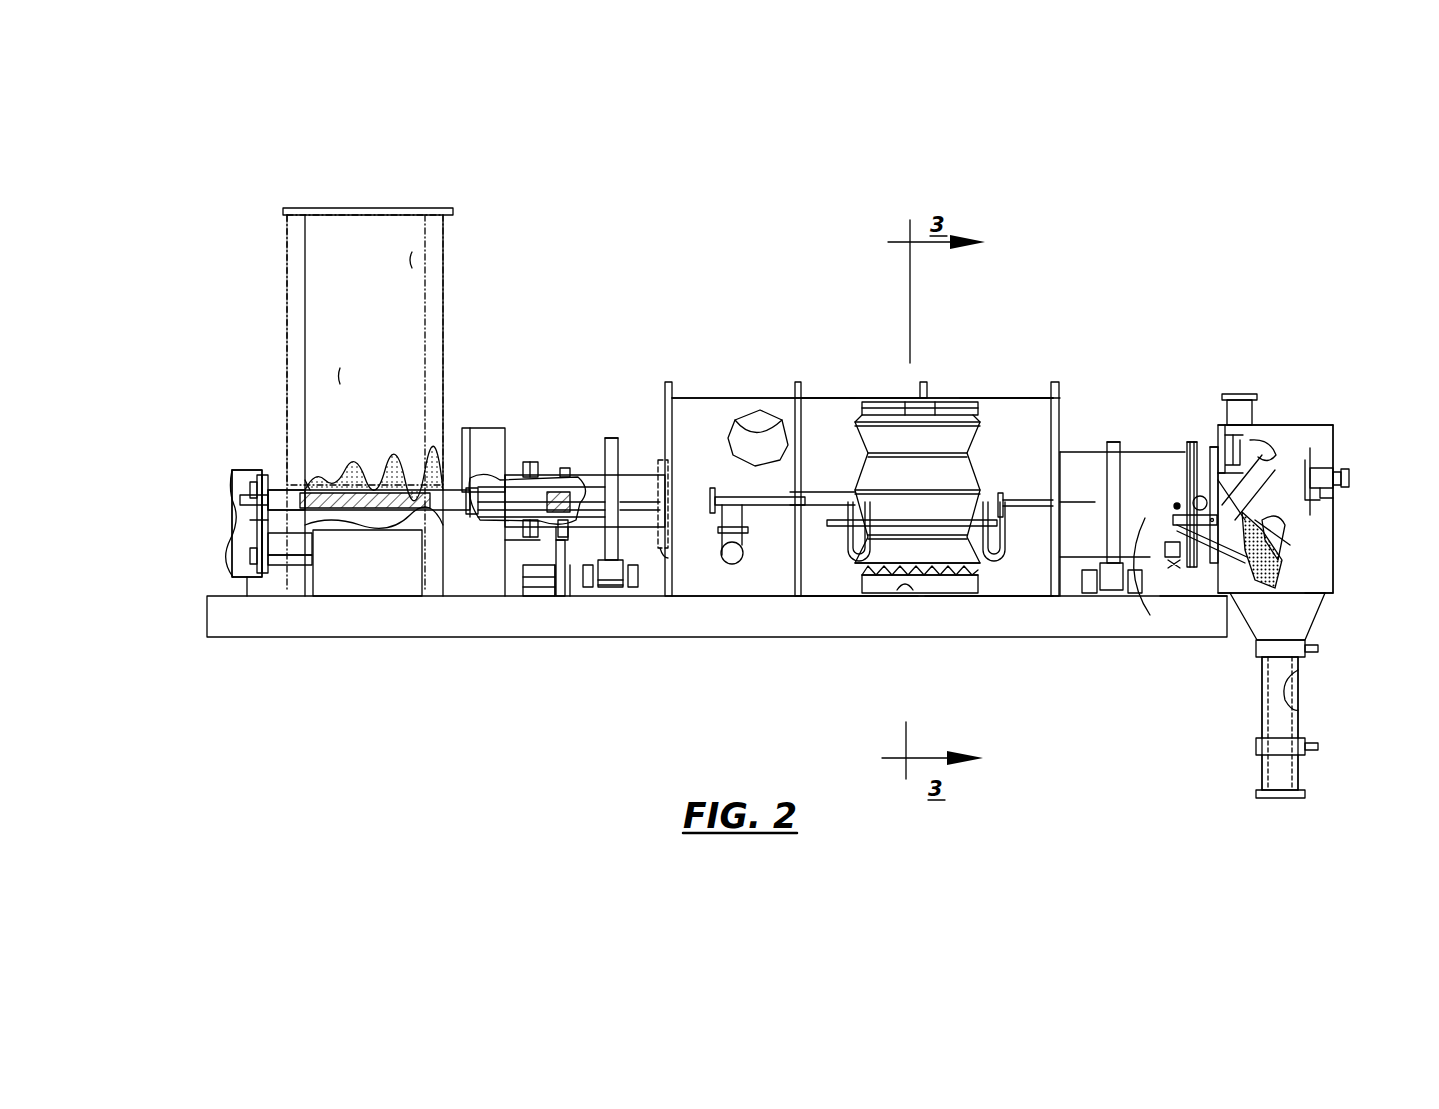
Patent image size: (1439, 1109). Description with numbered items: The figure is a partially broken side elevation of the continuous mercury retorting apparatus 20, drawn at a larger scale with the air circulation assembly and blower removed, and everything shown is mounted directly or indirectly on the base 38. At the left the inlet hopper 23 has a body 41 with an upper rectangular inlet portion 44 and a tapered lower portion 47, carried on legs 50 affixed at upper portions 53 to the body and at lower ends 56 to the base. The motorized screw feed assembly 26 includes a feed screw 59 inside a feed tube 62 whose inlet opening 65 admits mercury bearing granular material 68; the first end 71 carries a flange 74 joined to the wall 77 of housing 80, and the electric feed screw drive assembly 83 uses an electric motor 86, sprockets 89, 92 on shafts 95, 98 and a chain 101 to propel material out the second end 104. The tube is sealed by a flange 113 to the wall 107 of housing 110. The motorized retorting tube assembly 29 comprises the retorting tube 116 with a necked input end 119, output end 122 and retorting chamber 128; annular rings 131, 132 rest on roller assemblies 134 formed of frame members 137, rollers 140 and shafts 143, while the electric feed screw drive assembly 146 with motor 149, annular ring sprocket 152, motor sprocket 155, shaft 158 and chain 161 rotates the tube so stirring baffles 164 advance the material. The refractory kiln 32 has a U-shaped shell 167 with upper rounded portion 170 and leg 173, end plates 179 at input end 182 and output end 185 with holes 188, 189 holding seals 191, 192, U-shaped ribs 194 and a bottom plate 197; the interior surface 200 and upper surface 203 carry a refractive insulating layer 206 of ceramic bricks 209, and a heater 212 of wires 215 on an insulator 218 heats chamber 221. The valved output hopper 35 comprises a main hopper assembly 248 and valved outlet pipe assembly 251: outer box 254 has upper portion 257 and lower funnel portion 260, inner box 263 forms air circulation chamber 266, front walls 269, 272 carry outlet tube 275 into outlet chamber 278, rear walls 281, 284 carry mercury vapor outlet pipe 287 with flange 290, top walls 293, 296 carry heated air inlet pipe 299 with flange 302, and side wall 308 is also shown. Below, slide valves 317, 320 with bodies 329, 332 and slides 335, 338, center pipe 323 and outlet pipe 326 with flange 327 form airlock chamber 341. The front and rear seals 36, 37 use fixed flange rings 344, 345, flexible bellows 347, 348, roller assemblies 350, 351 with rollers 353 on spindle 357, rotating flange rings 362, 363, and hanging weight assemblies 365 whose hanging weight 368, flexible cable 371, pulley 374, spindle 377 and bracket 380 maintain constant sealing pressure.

The retorting apparatus 20 is at (772, 235).
The inlet hopper 23 is at (478, 207).
The motorized screw feed assembly 26 is at (237, 449).
The motorized retorting tube assembly 29 is at (620, 342).
The refractory kiln 32 is at (810, 330).
The valved output hopper 35 is at (1323, 282).
The front seal 36 is at (548, 306).
The rear seal 37 is at (1207, 290).
The base 38 is at (378, 640).
The body 41 is at (348, 244).
The upper rectangular inlet portion 44 is at (412, 260).
The tapered lower portion 47 is at (340, 376).
The legs 50 is at (290, 316).
The upper portions 53 is at (288, 262).
The lower ends 56 is at (432, 576).
The feed screw 59 is at (315, 470).
The feed tube 62 is at (452, 485).
The inlet opening 65 is at (322, 478).
The mercury bearing granular material 68 is at (402, 472).
The first end 71 is at (285, 488).
The flange 74 is at (270, 478).
The wall 77 is at (298, 520).
The housing 80 is at (235, 585).
The electric feed screw drive assembly 83 is at (236, 527).
The electric motor 86 is at (292, 558).
The sprocket 89 is at (252, 560).
The sprocket 92 is at (255, 498).
The shaft 95 is at (255, 596).
The shaft 98 is at (256, 510).
The chain 101 is at (255, 530).
The second end 104 is at (545, 490).
The wall 107 is at (507, 545).
The housing 110 is at (480, 428).
The flange 113 is at (510, 520).
The retorting tube 116 is at (636, 476).
The input end 119 is at (598, 478).
The output end 122 is at (1120, 480).
The retorting chamber 128 is at (520, 560).
The annular ring 131 is at (612, 440).
The annular ring 132 is at (1110, 442).
The roller assemblies 134 is at (612, 592).
The frame members 137 is at (626, 592).
The rollers 140 is at (622, 534).
The shafts 143 is at (636, 590).
The electric feed screw drive assembly 146 is at (530, 592).
The electric motor 149 is at (545, 592).
The annular ring sprocket 152 is at (555, 480).
The motor sprocket 155 is at (580, 592).
The shaft 158 is at (597, 590).
The chain 161 is at (560, 592).
The stirring baffles 164 is at (888, 487).
The U-shaped shell 167 is at (990, 398).
The upper rounded portion 170 is at (825, 398).
The leg 173 is at (773, 575).
The end plates 179 is at (668, 382).
The input end 182 is at (705, 398).
The output end 185 is at (1016, 398).
The hole 188 is at (662, 565).
The hole 189 is at (1062, 460).
The seal 191 is at (665, 465).
The seal 192 is at (1062, 470).
The U-shaped ribs 194 is at (797, 382).
The bottom plate 197 is at (962, 592).
The interior surface 200 is at (893, 398).
The upper surface 203 is at (900, 596).
The refractive insulating layer 206 is at (950, 402).
The ceramic bricks 209 is at (870, 411).
The heater 212 is at (870, 568).
The wires 215 is at (955, 572).
The insulator 218 is at (945, 565).
The chamber 221 is at (900, 437).
The main hopper assembly 248 is at (1325, 452).
The valved outlet pipe assembly 251 is at (1250, 722).
The outer box 254 is at (1342, 555).
The upper portion 257 is at (1333, 460).
The lower funnel portion 260 is at (1320, 600).
The inner box 263 is at (1256, 470).
The air circulation chamber 266 is at (1342, 494).
The front wall 269 is at (1240, 425).
The front wall 272 is at (1240, 460).
The outlet tube 275 is at (1228, 515).
The outlet chamber 278 is at (1275, 522).
The rear wall 281 is at (1347, 478).
The rear wall 284 is at (1347, 487).
The mercury vapor outlet pipe 287 is at (1335, 476).
The flange 290 is at (1347, 470).
The top wall 293 is at (1322, 430).
The top wall 296 is at (1270, 452).
The heated air inlet pipe 299 is at (1237, 395).
The flange 302 is at (1258, 435).
The side wall 308 is at (1252, 450).
The slide valve 317 is at (1255, 650).
The slide valve 320 is at (1262, 760).
The center pipe 323 is at (1300, 698).
The outlet pipe 326 is at (1285, 770).
The flange 327 is at (1262, 795).
The body 329 is at (1280, 657).
The body 332 is at (1265, 745).
The slide 335 is at (1308, 648).
The slide 338 is at (1308, 749).
The airlock chamber 341 is at (1292, 683).
The fixed flange ring 344 is at (527, 462).
The fixed flange ring 345 is at (1215, 570).
The flexible bellows 347 is at (537, 470).
The flexible bellows 348 is at (1207, 450).
The roller assembly 350 is at (582, 500).
The roller assembly 351 is at (1188, 478).
The rollers 353 is at (1200, 500).
The spindle 357 is at (1176, 507).
The rotating flange ring 362 is at (505, 548).
The rotating flange ring 363 is at (1190, 450).
The hanging weight assembly 365 is at (520, 560).
The hanging weight 368 is at (1175, 560).
The flexible cable 371 is at (555, 540).
The pulley 374 is at (1150, 615).
The spindle 377 is at (1285, 550).
The bracket 380 is at (1060, 502).